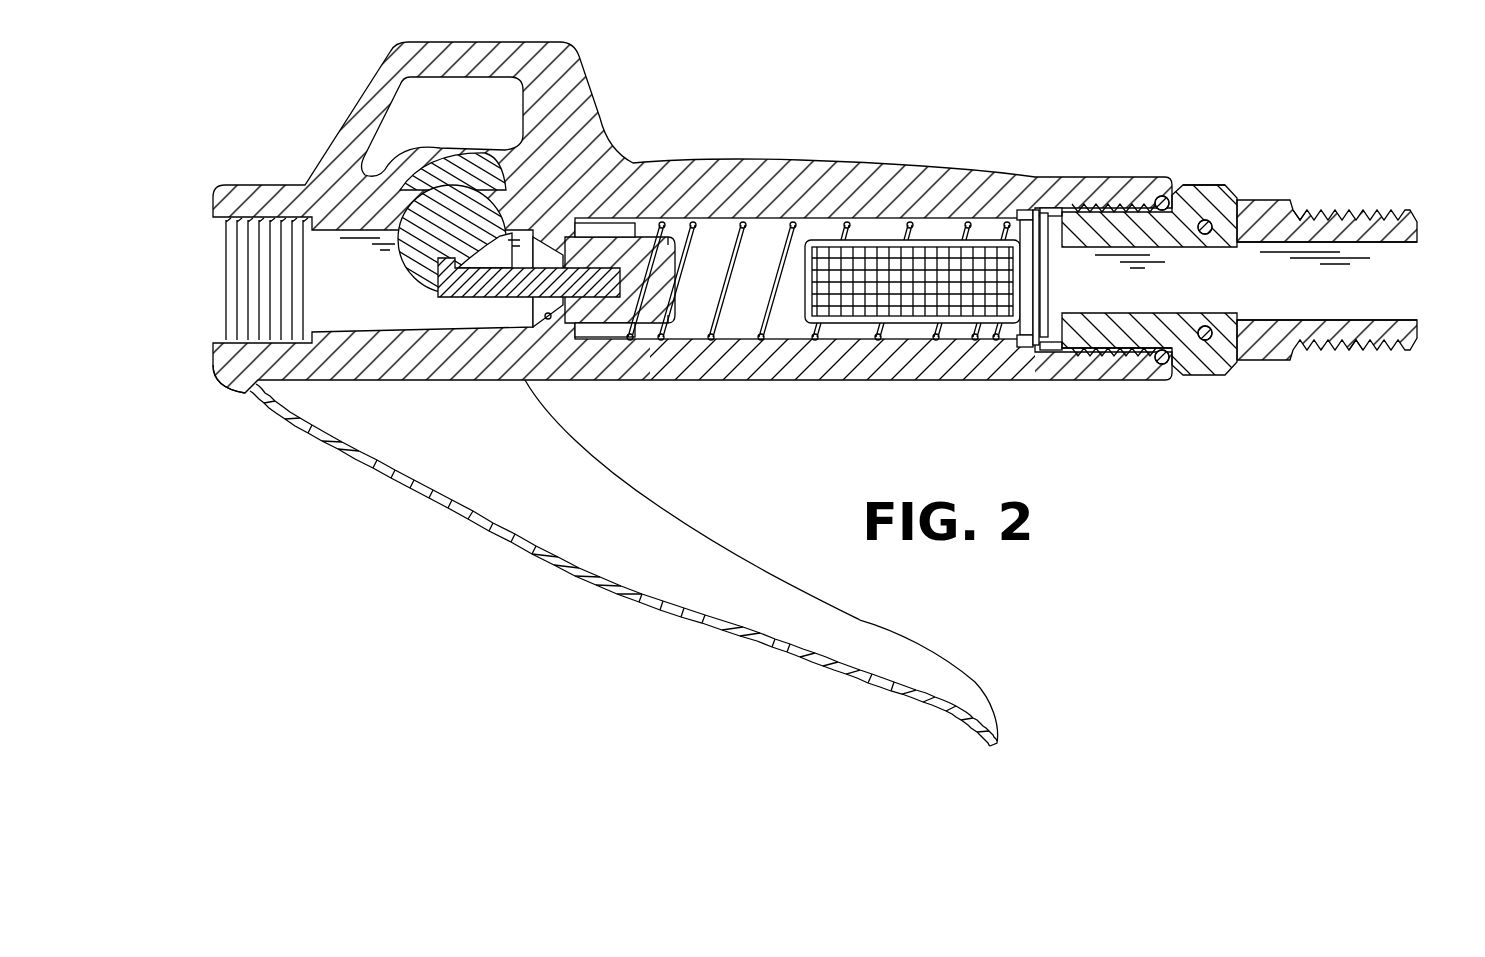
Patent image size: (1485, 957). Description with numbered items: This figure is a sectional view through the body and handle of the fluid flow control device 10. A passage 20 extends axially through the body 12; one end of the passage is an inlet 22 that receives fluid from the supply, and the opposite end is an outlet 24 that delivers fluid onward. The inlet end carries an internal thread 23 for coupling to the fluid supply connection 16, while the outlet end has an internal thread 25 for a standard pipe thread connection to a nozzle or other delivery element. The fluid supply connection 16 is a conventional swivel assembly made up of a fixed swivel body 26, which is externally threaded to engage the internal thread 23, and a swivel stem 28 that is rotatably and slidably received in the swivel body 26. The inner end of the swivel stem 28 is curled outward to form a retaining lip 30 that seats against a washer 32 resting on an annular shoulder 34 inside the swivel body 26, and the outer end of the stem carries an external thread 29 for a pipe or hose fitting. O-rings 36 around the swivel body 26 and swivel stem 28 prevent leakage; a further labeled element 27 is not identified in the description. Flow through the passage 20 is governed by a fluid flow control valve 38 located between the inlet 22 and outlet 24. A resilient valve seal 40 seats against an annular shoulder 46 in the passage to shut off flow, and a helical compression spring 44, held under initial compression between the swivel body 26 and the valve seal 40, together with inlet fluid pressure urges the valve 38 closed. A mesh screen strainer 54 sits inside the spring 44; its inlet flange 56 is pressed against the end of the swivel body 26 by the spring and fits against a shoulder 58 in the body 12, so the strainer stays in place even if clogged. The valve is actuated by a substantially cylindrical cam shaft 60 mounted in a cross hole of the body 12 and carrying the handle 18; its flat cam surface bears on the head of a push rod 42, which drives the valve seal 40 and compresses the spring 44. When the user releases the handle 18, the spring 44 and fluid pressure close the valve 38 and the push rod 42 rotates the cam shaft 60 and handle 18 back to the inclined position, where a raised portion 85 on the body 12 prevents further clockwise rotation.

The spray nozzle assembly 10 is at (706, 70).
The body 12 is at (743, 168).
The fluid supply connection 16 is at (1388, 197).
The handle 18 is at (430, 495).
The passage 20 is at (670, 230).
The inlet 22 is at (1400, 282).
The internal thread 23 is at (1137, 365).
The outlet 24 is at (330, 243).
The internal thread 25 is at (215, 302).
The swivel body 26 is at (1203, 184).
The retaining nut 27 is at (1112, 180).
The swivel stem 28 is at (1280, 200).
The external thread 29 is at (1350, 343).
The retaining lip 30 is at (1050, 347).
The washer 32 is at (1047, 210).
The annular shoulder 34 is at (1085, 356).
The O-rings 36 is at (1156, 197).
The fluid flow control valve 38 is at (626, 228).
The valve seal 40 is at (640, 325).
The push rod 42 is at (501, 301).
The helical compression spring 44 is at (700, 240).
The annular shoulder 46 is at (548, 318).
The mesh screen strainer 54 is at (860, 262).
The flange 56 is at (1025, 212).
The shoulder 58 is at (1032, 348).
The cam shaft 60 is at (456, 190).
The raised portion 85 is at (235, 398).